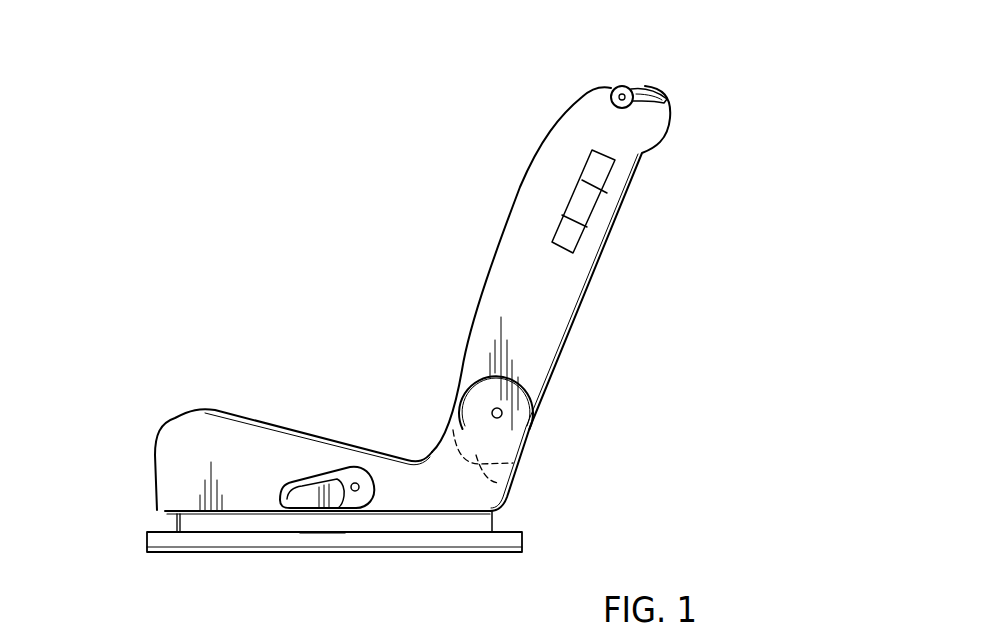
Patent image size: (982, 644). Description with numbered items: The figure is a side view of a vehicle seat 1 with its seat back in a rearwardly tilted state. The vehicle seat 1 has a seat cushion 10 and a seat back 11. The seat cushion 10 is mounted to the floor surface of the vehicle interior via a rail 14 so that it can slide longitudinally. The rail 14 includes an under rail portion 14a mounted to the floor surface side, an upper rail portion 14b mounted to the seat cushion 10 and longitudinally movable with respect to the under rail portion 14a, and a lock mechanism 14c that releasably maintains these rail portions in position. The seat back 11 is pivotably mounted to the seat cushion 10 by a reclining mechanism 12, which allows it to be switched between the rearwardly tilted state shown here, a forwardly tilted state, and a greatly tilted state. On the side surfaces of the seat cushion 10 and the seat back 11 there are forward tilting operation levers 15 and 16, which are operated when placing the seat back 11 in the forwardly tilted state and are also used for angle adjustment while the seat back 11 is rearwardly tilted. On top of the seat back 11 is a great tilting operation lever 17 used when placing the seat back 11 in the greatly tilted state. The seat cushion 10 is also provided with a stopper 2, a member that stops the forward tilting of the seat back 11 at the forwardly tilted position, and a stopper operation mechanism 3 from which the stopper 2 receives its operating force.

The vehicle seat 1 is at (247, 352).
The stopper 2 is at (435, 477).
The stopper operation mechanism 3 is at (500, 483).
The seat cushion 10 is at (183, 427).
The seat back 11 is at (548, 295).
The reclining mechanism 12 is at (490, 410).
The rail 14 is at (77, 488).
The under rail portion 14a is at (163, 543).
The upper rail portion 14b is at (180, 523).
The lock mechanism 14c is at (322, 533).
The forward tilting operation lever 15 is at (320, 480).
The forward tilting operation lever 16 is at (602, 170).
The great tilting operation lever 17 is at (647, 88).